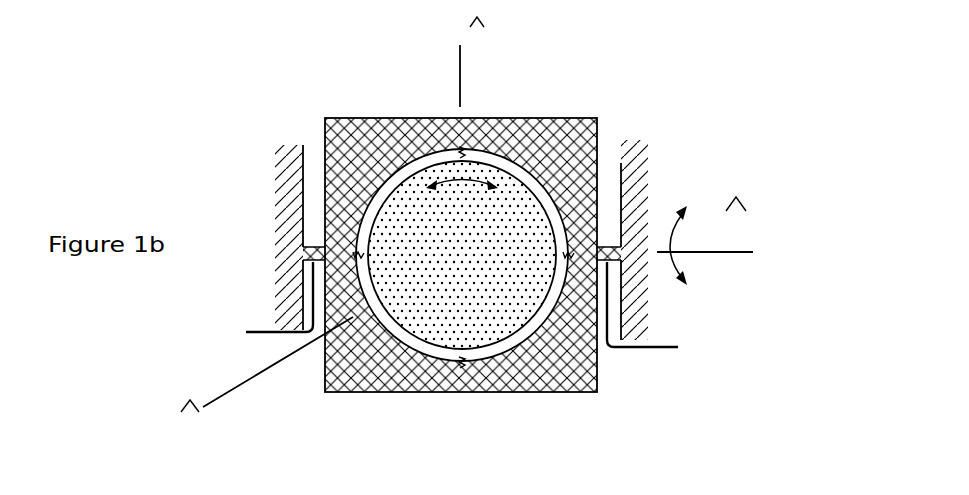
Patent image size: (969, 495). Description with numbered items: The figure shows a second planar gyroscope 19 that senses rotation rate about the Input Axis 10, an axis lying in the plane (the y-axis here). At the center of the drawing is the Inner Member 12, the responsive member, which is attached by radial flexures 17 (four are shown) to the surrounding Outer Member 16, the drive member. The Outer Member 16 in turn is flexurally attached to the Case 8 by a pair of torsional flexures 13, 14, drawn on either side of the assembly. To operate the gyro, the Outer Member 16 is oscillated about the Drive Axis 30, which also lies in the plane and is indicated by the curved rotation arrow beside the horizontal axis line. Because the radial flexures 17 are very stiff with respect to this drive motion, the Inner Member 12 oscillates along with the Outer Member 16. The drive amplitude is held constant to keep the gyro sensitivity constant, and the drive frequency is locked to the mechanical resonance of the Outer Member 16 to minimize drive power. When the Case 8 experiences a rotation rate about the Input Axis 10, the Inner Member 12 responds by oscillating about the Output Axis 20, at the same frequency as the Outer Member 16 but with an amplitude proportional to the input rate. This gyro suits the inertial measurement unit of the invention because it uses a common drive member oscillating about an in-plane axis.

The Case 8 is at (288, 147).
The Input Axis 10 is at (447, 72).
The Inner Member 12 is at (453, 317).
The torsional flexure 13 is at (266, 302).
The torsional flexure 14 is at (660, 310).
The Outer Member 16 is at (597, 378).
The radial flexures 17 is at (470, 147).
The second planar gyroscope 19 is at (737, 65).
The Output Axis 20 is at (268, 377).
The Drive Axis 30 is at (705, 235).